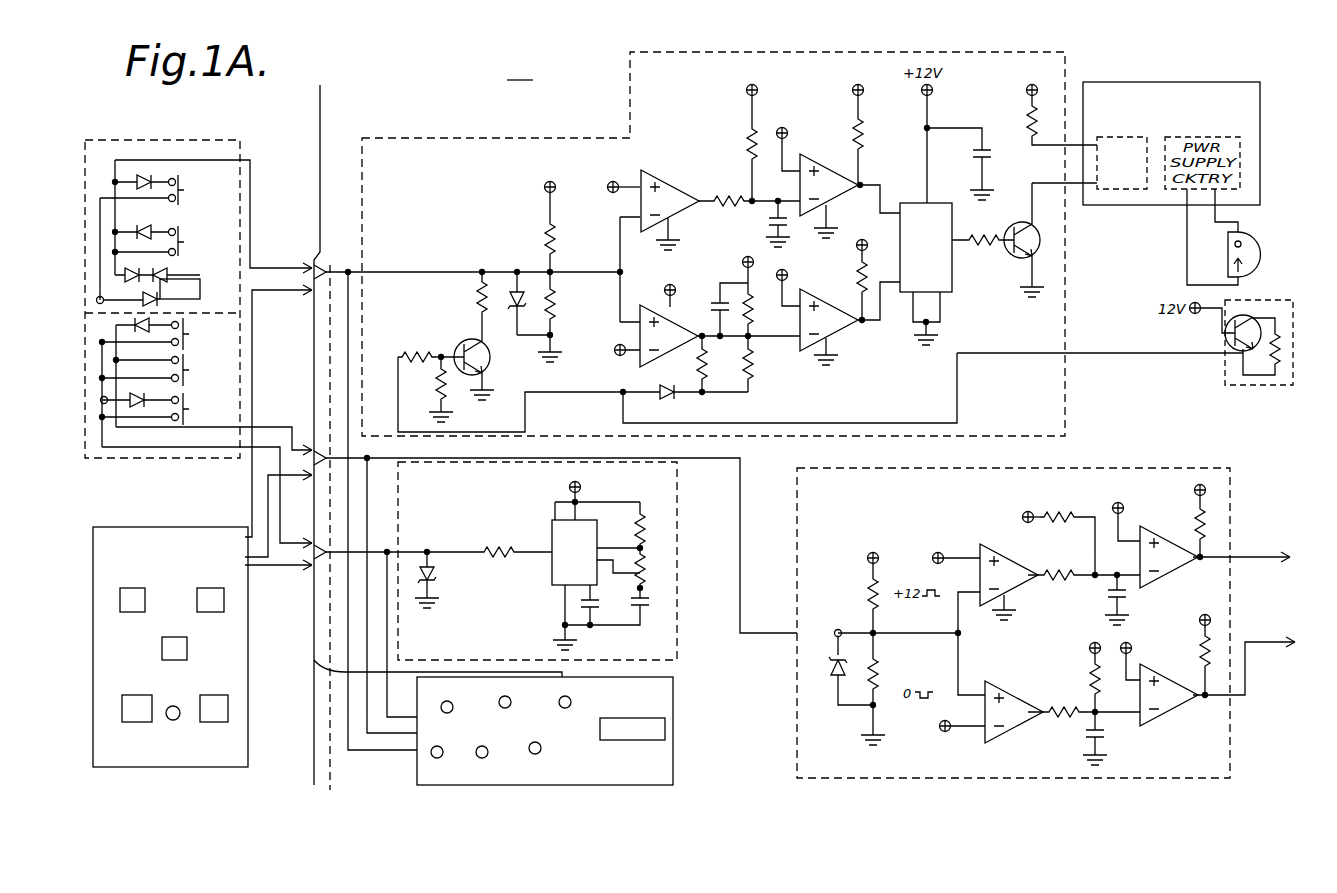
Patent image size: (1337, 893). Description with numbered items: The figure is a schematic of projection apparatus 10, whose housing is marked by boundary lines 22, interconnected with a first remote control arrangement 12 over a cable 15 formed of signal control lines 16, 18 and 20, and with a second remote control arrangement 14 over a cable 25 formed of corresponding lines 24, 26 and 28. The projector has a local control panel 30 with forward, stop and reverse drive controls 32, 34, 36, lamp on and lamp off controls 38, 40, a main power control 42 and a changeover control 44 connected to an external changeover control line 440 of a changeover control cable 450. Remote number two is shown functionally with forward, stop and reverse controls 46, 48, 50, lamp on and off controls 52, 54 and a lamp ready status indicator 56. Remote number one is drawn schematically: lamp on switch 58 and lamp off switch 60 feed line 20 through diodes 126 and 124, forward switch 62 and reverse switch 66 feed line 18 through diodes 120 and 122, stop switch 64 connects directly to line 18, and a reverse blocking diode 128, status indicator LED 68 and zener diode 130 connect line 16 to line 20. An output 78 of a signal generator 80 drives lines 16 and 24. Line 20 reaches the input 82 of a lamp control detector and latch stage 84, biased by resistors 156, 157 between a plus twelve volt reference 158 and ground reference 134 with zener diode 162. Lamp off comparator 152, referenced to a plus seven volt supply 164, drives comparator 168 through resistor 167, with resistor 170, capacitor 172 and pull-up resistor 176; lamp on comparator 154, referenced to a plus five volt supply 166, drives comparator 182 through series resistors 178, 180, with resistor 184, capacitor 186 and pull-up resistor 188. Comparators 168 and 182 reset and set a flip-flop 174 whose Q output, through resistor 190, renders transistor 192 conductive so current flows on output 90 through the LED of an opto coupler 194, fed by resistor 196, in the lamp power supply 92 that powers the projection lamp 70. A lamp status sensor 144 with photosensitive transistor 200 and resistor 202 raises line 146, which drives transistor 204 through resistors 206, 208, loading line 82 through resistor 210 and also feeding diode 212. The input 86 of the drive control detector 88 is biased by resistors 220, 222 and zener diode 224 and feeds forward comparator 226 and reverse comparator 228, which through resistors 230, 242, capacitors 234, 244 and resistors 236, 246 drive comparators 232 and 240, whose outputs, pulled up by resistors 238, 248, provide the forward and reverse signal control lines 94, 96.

The projector apparatus 10 is at (520, 70).
The first remote control arrangement 12 is at (227, 140).
The second remote control arrangement 14 is at (254, 760).
The interconnection cable arrangement 15 is at (322, 138).
The remote No. 2 interconnection cable 25 is at (372, 434).
The signal control line 16 is at (286, 543).
The signal control line 18 is at (272, 427).
The signal control line 20 is at (292, 268).
The boundary lines 22 is at (334, 772).
The signal control line 24 is at (262, 565).
The signal control line 26 is at (268, 488).
The signal control line 28 is at (270, 290).
The local control panel 30 is at (692, 755).
The forward drive control 32 is at (431, 753).
The stop control 34 is at (488, 752).
The reverse drive control 36 is at (541, 750).
The lamp on control 38 is at (511, 702).
The lamp off control 40 is at (444, 701).
The main power control 42 is at (652, 718).
The changeover control 44 is at (571, 702).
The forward film drive control 46 is at (135, 612).
The stop control 48 is at (187, 648).
The reverse film drive control 50 is at (224, 600).
The lamp on control 52 is at (228, 703).
The lamp off control 54 is at (137, 722).
The lamp ready status indicator 56 is at (180, 713).
The lamp on switch 58 is at (182, 185).
The lamp off switch 60 is at (182, 236).
The forward switch 62 is at (188, 340).
The stop switch 64 is at (188, 376).
The reverse switch 66 is at (188, 414).
The lamp ready status indicator LED 68 is at (170, 273).
The projection lamp 70 is at (1256, 246).
The signal generator output 78 is at (387, 550).
The signal generator 80 is at (489, 541).
The lamp control detector input 82 is at (347, 270).
The lamp control detector and latch stage 84 is at (658, 48).
The drive control detector input 86 is at (740, 633).
The drive control detector stage 88 is at (818, 466).
The lamp control output line 90 is at (1068, 186).
The lamp power supply 92 is at (1170, 80).
The forward signal control line 94 is at (1260, 555).
The reverse signal control line 96 is at (1268, 642).
The diode 120 is at (147, 331).
The diode 122 is at (152, 395).
The diode 124 is at (138, 230).
The diode 126 is at (142, 178).
The reverse blocking diode 128 is at (180, 289).
The zener diode 130 is at (140, 292).
The ground reference potential 134 is at (556, 335).
The lamp status sensor 144 is at (1278, 388).
The lamp status control line 146 is at (1162, 354).
The lamp off comparator 152 is at (661, 188).
The lamp on comparator 154 is at (673, 348).
The first bias resistor 156 is at (548, 240).
The second bias resistor 157 is at (556, 305).
The +12 VDC supply reference 158 is at (544, 190).
The zener diode 162 is at (517, 290).
The +7 VDC supply reference 164 is at (615, 181).
The +5 VDC supply reference 166 is at (620, 358).
The resistor 167 is at (728, 198).
The second lamp off comparator 168 is at (833, 208).
The resistor 170 is at (752, 140).
The capacitor 172 is at (776, 224).
The flip-flop 174 is at (945, 290).
The resistor 176 is at (866, 129).
The resistor 178 is at (719, 365).
The resistor 180 is at (752, 360).
The second lamp on comparator 182 is at (838, 332).
The resistor 184 is at (752, 305).
The capacitor 186 is at (718, 300).
The resistor 188 is at (858, 279).
The resistor 190 is at (996, 245).
The NPN transistor 192 is at (1014, 258).
The opto coupler stage 194 is at (1117, 190).
The resistor 196 is at (1028, 115).
The photosensitive transistor 200 is at (1256, 298).
The resistor 202 is at (1262, 375).
The NPN transistor 204 is at (458, 348).
The resistor 206 is at (430, 357).
The resistor 208 is at (448, 385).
The resistor 210 is at (478, 296).
The diode 212 is at (670, 396).
The first bias resistor 220 is at (862, 594).
The second bias resistor 222 is at (880, 668).
The zener diode 224 is at (835, 678).
The first forward comparator 226 is at (987, 555).
The second reverse comparator 228 is at (1015, 732).
The resistor 230 is at (1058, 580).
The comparator 232 is at (1165, 535).
The capacitor 234 is at (1112, 594).
The resistor 236 is at (1058, 512).
The resistor 238 is at (1207, 512).
The comparator 240 is at (1168, 705).
The resistor 242 is at (1062, 718).
The capacitor 244 is at (1104, 734).
The resistor 246 is at (1088, 680).
The resistor 248 is at (1200, 658).
The external changeover control line 440 is at (340, 676).
The changeover control cable 450 is at (325, 640).